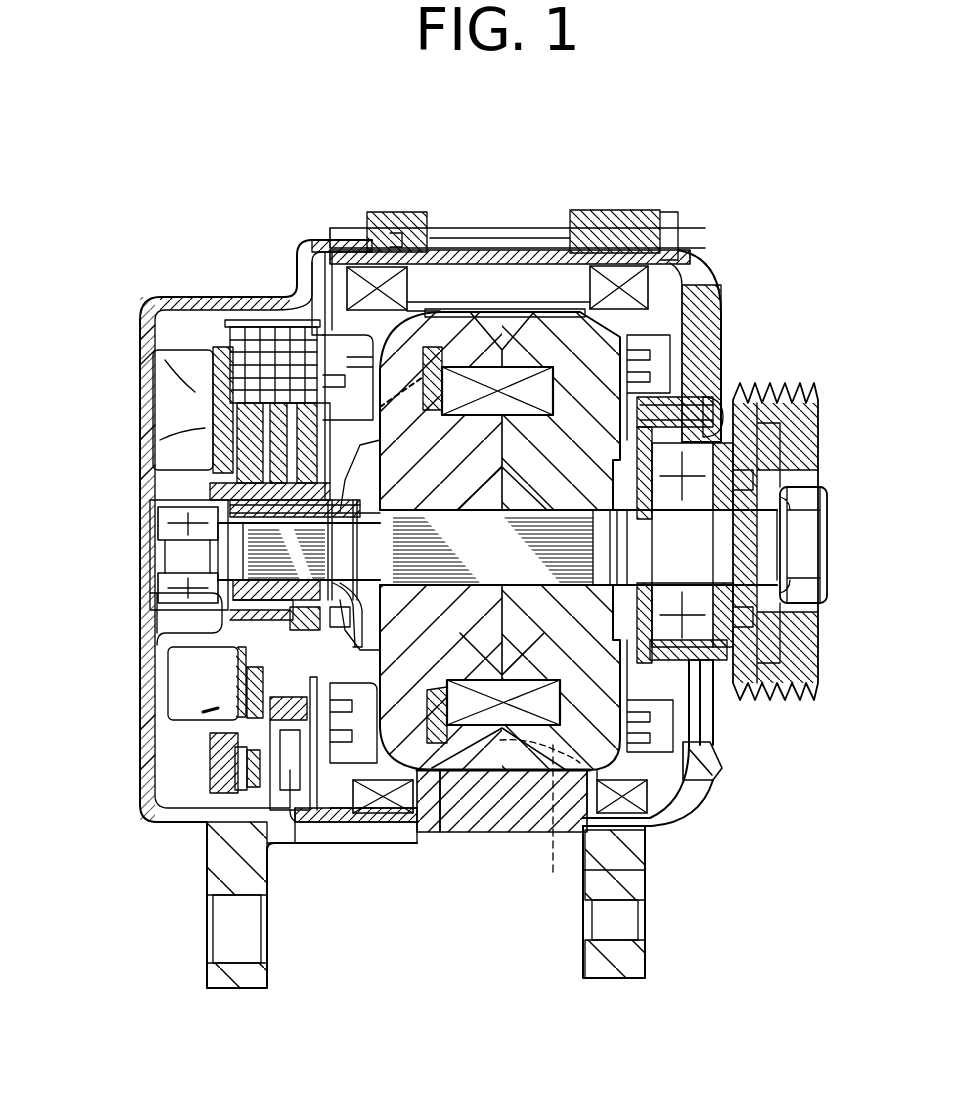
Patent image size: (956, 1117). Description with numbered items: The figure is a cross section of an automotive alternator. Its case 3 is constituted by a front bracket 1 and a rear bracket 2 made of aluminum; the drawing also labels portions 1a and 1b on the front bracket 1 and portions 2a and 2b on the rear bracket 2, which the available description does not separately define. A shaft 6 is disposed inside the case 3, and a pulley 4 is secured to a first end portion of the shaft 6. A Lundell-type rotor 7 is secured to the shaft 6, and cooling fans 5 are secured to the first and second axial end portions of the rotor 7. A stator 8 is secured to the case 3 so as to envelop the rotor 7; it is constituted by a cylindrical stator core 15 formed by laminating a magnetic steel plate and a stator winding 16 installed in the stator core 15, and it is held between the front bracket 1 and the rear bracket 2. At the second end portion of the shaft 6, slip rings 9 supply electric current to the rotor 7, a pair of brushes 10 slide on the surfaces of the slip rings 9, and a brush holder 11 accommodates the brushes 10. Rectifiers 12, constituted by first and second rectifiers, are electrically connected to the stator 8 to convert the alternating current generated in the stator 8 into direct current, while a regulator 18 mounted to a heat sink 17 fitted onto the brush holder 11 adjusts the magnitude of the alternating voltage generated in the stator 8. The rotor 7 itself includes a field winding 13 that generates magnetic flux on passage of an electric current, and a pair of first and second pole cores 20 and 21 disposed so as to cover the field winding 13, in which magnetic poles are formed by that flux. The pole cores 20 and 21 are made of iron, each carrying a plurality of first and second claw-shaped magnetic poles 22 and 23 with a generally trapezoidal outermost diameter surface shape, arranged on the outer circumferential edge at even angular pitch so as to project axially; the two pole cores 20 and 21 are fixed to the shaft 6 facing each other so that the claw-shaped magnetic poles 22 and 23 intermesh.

The front bracket 1 is at (732, 768).
The front bracket ribs 1a is at (708, 372).
The front bracket wall 1b is at (695, 262).
The rear bracket 2 is at (190, 830).
The rear bracket side wall 2a is at (146, 398).
The rear bracket cylindrical portion 2b is at (332, 252).
The case 3 is at (778, 820).
The pulley 4 is at (782, 690).
The cooling fans 5 is at (690, 335).
The shaft 6 is at (775, 548).
The Lundell-type rotor 7 is at (548, 165).
The stator 8 is at (515, 897).
The slip rings 9 is at (155, 508).
The brushes 10 is at (240, 426).
The brush holder 11 is at (290, 322).
The rectifiers 12 is at (203, 712).
The field winding 13 is at (502, 360).
The stator core 15 is at (515, 820).
The stator winding 16 is at (432, 820).
The heat sink 17 is at (185, 392).
The regulator 18 is at (150, 345).
The first pole core 20 is at (578, 355).
The second pole core 21 is at (405, 365).
The first claw-shaped magnetic poles 22 is at (485, 758).
The second claw-shaped magnetic poles 23 is at (540, 822).